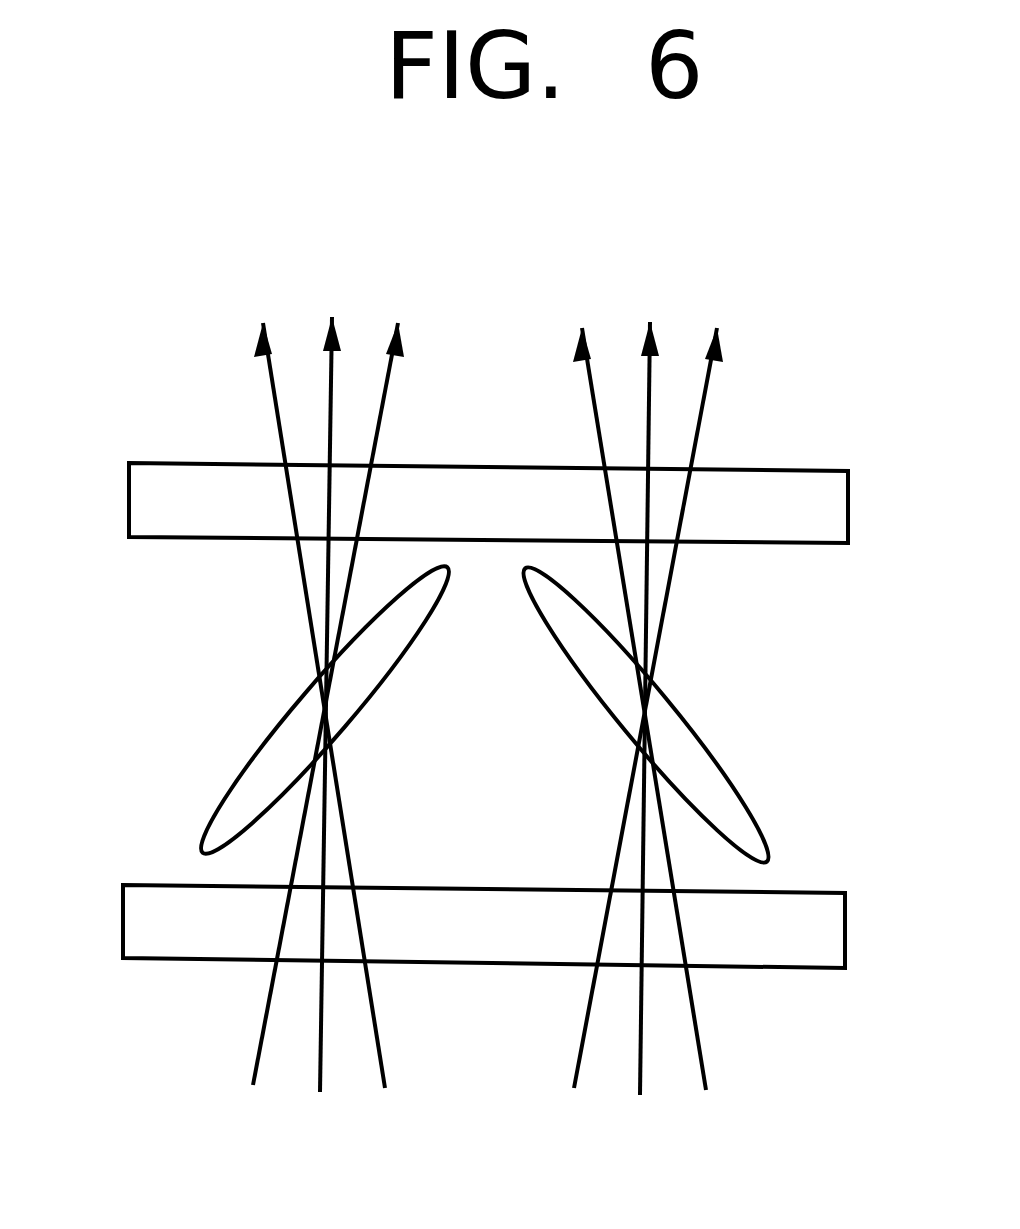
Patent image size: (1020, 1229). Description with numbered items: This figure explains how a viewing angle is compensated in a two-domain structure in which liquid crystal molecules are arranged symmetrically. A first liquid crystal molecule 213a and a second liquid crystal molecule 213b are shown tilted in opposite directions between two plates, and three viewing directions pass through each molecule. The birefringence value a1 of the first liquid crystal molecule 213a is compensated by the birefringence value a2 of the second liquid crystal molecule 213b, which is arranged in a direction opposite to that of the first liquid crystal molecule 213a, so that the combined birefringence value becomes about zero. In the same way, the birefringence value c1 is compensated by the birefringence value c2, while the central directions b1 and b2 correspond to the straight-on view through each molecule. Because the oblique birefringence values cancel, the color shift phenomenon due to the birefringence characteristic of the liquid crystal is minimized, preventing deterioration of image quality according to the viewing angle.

The first liquid crystal molecule 213a is at (260, 772).
The second liquid crystal molecule 213b is at (712, 778).
The birefringence value a1 is at (315, 683).
The birefringence value b1 is at (335, 685).
The birefringence value c1 is at (336, 683).
The birefringence value a2 is at (635, 686).
The birefringence value b2 is at (654, 689).
The birefringence value c2 is at (656, 686).